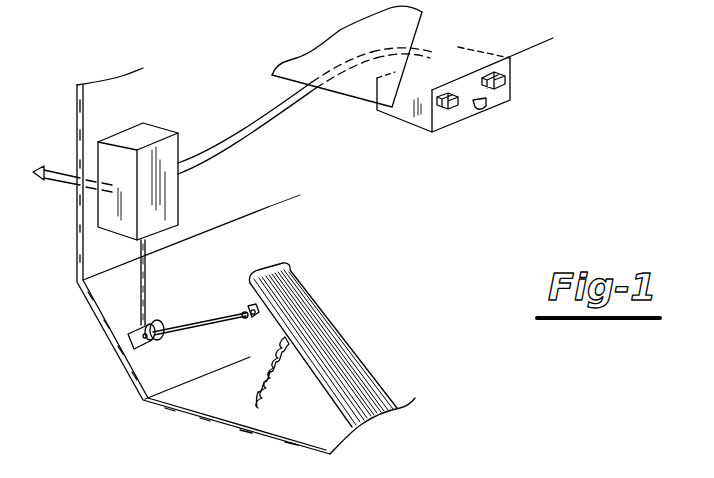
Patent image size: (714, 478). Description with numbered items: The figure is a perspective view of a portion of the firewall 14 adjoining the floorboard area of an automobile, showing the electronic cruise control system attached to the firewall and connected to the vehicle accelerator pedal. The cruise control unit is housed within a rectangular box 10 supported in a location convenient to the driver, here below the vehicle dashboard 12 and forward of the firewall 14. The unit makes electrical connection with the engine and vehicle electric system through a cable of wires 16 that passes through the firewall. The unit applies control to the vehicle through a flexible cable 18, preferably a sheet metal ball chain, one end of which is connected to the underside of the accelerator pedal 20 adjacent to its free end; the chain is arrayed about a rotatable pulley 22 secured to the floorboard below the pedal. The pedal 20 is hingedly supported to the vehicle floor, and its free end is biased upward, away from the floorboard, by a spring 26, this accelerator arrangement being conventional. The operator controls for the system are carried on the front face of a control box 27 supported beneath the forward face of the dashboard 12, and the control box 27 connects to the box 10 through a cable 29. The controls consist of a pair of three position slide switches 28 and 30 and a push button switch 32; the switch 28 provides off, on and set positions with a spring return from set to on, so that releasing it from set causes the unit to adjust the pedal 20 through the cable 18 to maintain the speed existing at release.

The rectangular box 10 is at (172, 210).
The dashboard 12 is at (462, 40).
The firewall 14 is at (272, 178).
The cable of wires 16 is at (55, 180).
The flexible cable 18 is at (233, 316).
The accelerator pedal 20 is at (295, 298).
The rotatable pulley 22 is at (160, 320).
The spring 26 is at (268, 397).
The control box 27 is at (500, 92).
The three position slide switch 28 is at (450, 108).
The cable 29 is at (253, 132).
The three position slide switch 30 is at (505, 78).
The push button switch 32 is at (480, 111).